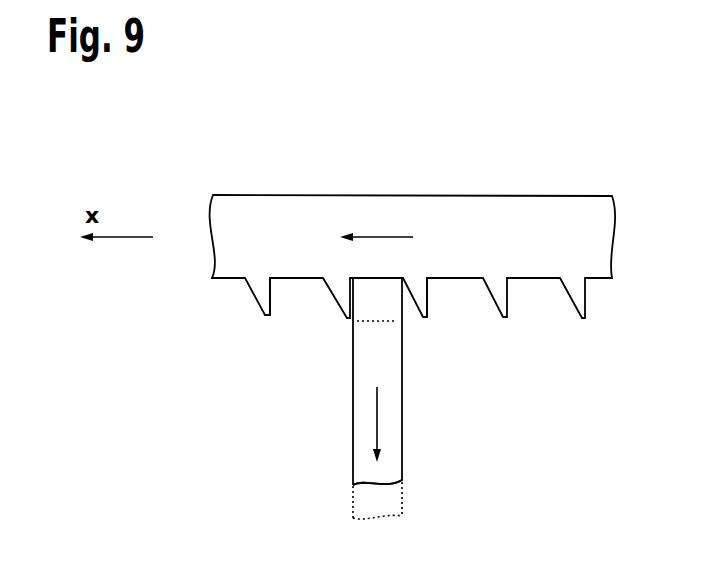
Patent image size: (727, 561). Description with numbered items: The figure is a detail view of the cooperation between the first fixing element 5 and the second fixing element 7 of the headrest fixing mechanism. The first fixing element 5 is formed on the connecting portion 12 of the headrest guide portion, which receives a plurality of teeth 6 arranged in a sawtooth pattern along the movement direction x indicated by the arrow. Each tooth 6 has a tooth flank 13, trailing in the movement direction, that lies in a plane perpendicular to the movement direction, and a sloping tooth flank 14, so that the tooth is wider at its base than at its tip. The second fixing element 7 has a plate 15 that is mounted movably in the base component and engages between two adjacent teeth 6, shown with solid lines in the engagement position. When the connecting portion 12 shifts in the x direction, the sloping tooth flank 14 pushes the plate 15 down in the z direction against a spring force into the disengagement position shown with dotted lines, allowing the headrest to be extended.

The first fixing element 5 is at (413, 245).
The connecting portion 12 is at (462, 208).
The teeth 6 is at (257, 291).
The tooth flank 13 is at (272, 307).
The tooth flank 14 is at (266, 314).
The second fixing element 7 is at (331, 470).
The plate 15 is at (390, 461).